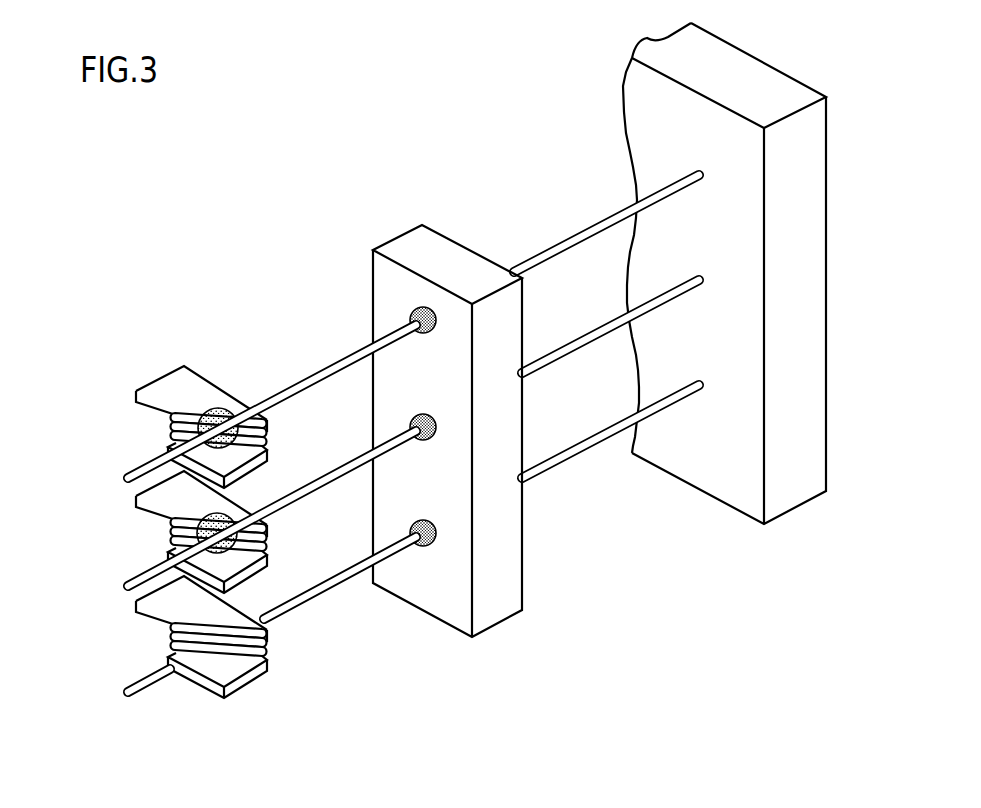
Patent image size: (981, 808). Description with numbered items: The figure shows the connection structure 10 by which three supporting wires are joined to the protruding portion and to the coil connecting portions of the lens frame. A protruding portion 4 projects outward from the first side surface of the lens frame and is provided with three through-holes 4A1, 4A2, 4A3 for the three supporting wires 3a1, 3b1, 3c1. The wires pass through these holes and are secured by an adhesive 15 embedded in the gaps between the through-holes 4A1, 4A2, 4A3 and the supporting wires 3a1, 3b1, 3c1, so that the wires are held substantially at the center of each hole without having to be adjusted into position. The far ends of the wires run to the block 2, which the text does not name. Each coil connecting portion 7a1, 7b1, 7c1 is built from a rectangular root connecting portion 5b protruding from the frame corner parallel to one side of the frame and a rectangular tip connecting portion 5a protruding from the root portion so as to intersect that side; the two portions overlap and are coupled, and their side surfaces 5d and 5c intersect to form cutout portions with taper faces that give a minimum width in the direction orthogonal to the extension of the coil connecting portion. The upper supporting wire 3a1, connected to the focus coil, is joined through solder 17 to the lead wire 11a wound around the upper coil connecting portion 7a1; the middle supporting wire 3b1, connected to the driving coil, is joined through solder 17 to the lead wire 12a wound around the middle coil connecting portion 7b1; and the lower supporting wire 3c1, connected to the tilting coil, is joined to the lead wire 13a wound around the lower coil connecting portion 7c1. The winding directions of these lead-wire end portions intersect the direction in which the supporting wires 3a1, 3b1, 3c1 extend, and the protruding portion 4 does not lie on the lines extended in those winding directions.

The circuit board 2 is at (727, 67).
The upper supporting wire 3a1 is at (583, 232).
The middle supporting wire 3b1 is at (583, 340).
The lower supporting wire 3c1 is at (583, 447).
The terminal block 4 is at (412, 242).
The through-hole 4A1 is at (408, 313).
The through-hole 4A2 is at (408, 420).
The through-hole 4A3 is at (408, 526).
The connection structure 10 is at (448, 182).
The adhesive 15 is at (404, 329).
The solder 17 is at (223, 415).
The tip connecting portion 5a is at (176, 465).
The root connecting portion 5b is at (163, 385).
The side surface of tip connecting portion 5c is at (177, 438).
The side surface of root connecting portion 5d is at (138, 399).
The upper coil connecting portion 7a1 is at (148, 408).
The middle coil connecting portion 7b1 is at (152, 536).
The lower coil connecting portion 7c1 is at (152, 642).
The lead-out portion 11a is at (176, 387).
The lead-out portion 12a is at (181, 537).
The lead-out portion 13a is at (181, 641).